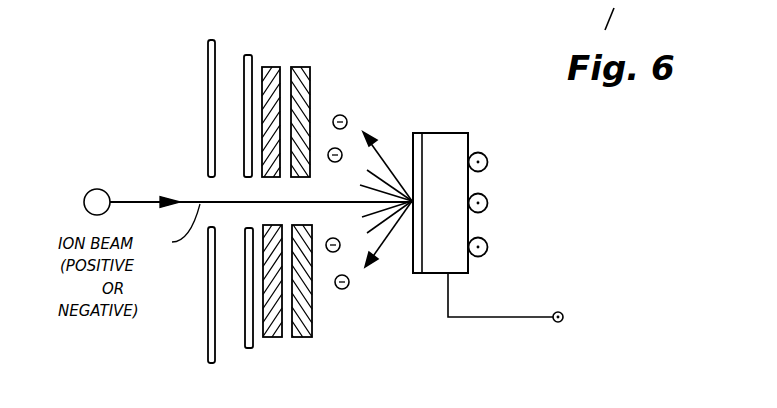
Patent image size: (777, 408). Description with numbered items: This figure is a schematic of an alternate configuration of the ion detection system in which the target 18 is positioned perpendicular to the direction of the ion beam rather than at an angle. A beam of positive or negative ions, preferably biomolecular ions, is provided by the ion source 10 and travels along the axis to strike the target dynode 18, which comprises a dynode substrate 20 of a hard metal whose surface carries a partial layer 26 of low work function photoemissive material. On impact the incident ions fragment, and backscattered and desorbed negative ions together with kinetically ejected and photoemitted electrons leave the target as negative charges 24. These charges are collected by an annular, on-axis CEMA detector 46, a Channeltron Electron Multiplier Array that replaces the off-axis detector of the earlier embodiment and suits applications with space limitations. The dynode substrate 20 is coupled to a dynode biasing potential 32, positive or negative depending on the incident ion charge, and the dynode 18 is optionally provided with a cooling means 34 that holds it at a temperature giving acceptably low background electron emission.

The ion source 10 is at (207, 88).
The CEMA detector 46 is at (310, 85).
The negative charges 24 is at (343, 115).
The dynode substrate 20 is at (448, 140).
The target dynode 18 is at (478, 225).
The cooling means 34 is at (492, 195).
The photoemissive layer 26 is at (413, 262).
The dynode biasing potential 32 is at (560, 311).